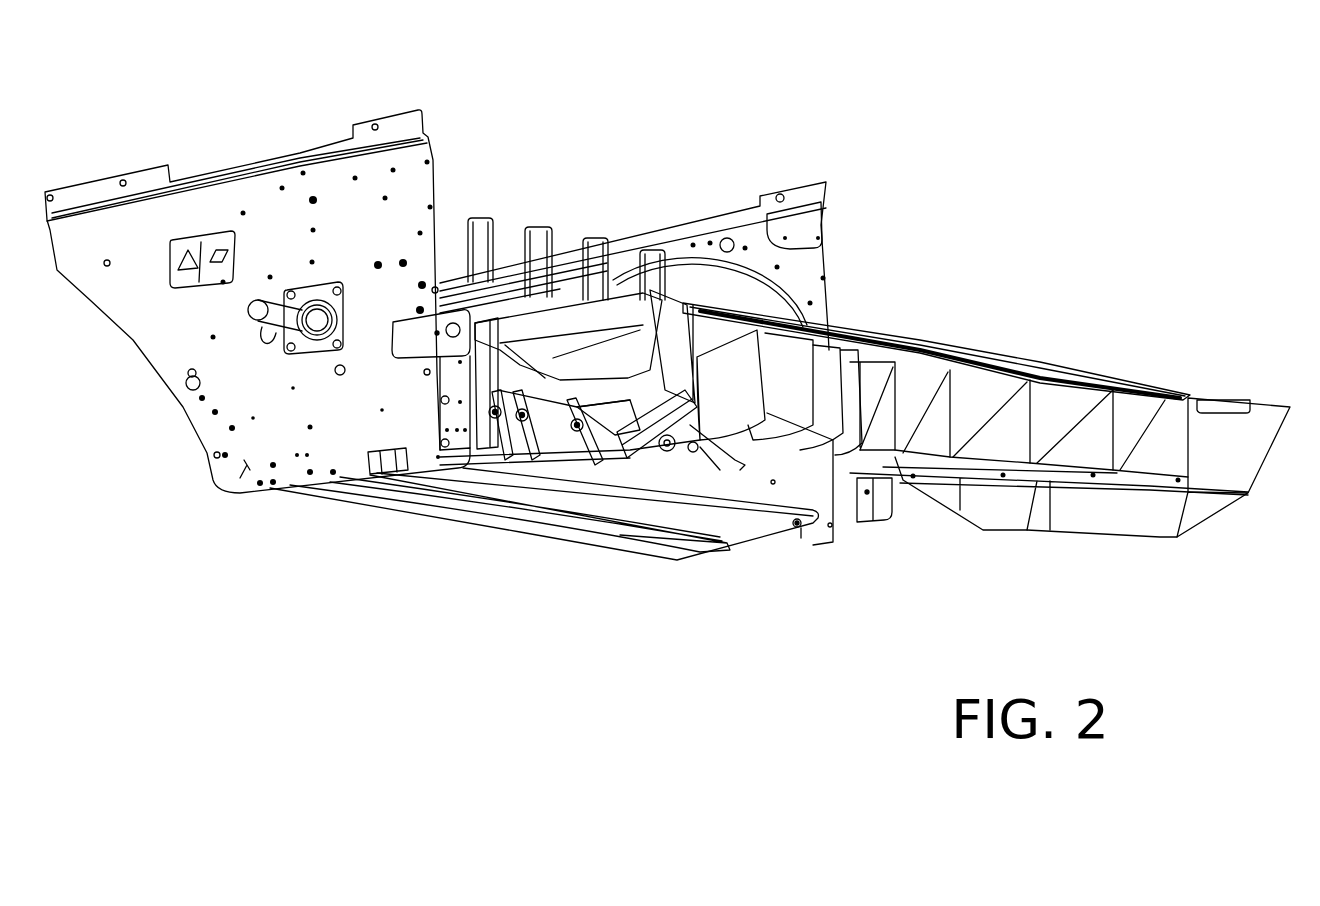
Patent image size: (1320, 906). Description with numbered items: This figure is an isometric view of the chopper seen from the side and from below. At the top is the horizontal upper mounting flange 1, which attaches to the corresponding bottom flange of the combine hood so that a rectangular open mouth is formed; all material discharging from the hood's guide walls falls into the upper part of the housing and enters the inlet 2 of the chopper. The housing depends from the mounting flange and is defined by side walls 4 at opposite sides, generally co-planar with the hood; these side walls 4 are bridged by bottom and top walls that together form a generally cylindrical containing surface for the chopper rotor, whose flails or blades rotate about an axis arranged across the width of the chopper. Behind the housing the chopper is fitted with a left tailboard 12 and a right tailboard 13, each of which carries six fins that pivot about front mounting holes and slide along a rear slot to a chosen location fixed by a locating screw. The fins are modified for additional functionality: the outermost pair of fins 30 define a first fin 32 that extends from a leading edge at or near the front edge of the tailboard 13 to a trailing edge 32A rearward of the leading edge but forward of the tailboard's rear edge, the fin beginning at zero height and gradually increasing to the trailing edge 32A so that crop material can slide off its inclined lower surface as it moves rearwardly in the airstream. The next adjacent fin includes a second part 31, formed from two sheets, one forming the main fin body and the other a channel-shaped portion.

The upper mounting flange 1 is at (196, 152).
The inlet 2 is at (649, 188).
The side walls 4 is at (347, 453).
The left tailboard 12 is at (880, 332).
The right tailboard 13 is at (1103, 370).
The outermost pair of fins 30 is at (610, 357).
The second fin part 31 is at (715, 330).
The first fin 32 is at (597, 400).
The trailing edge 32A is at (645, 382).